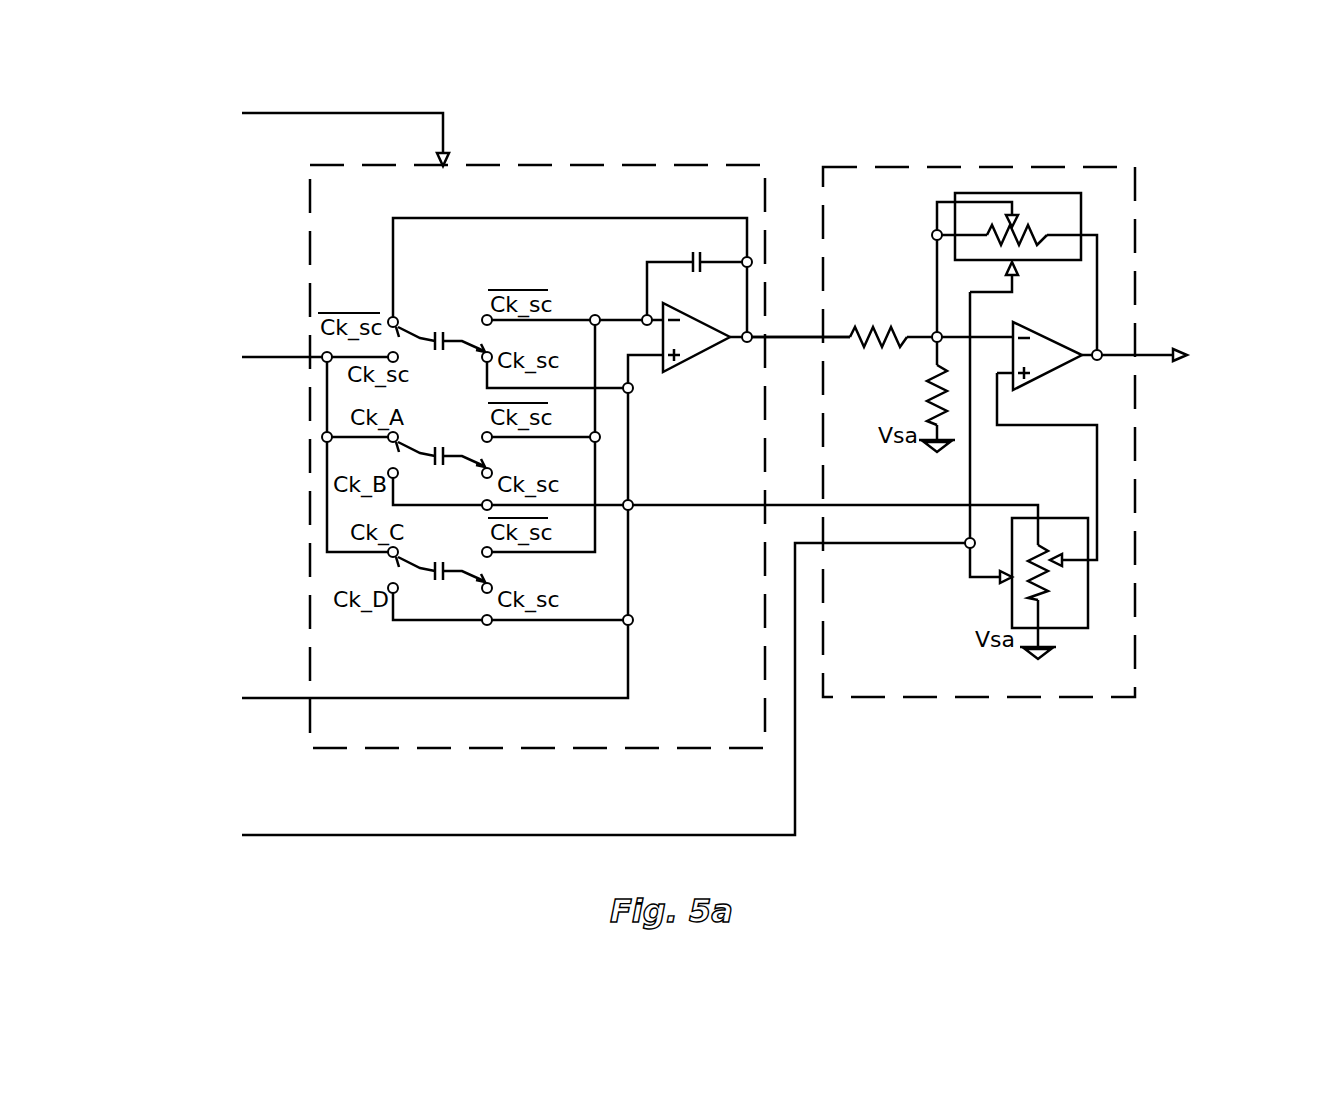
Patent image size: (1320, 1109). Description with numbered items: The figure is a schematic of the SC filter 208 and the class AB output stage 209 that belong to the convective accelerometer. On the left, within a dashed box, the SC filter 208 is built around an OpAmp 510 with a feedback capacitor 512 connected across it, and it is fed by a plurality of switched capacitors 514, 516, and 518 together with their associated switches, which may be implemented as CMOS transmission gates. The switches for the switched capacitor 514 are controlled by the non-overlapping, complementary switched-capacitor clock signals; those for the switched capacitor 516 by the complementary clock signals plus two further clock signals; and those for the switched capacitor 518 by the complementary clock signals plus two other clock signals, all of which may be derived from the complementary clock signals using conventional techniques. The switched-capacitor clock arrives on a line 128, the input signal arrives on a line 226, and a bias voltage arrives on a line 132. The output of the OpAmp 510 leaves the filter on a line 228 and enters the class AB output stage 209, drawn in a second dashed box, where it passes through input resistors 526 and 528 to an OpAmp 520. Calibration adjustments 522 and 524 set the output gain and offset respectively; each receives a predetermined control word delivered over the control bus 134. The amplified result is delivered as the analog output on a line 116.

The SC filter 208 is at (507, 750).
The class AB output stage 209 is at (908, 700).
The output line of amplifier 510 228 is at (768, 340).
The OpAmp 510 is at (756, 337).
The feedback capacitor 512 is at (697, 274).
The switched capacitor 514 is at (440, 328).
The switched capacitor 516 is at (440, 443).
The switched capacitor 518 is at (440, 558).
The OpAmp 520 is at (1047, 441).
The calibration adjustment 522 is at (1017, 385).
The calibration adjustment 524 is at (1044, 588).
The input resistor 526 is at (895, 330).
The input resistor 528 is at (928, 399).
The clock signal line Ck_sc 128 is at (308, 127).
The input signal line 226 is at (280, 372).
The bias voltage line Vbs 132 is at (397, 572).
The control bus 134 is at (568, 718).
The analog output AOUT 116 is at (1184, 371).